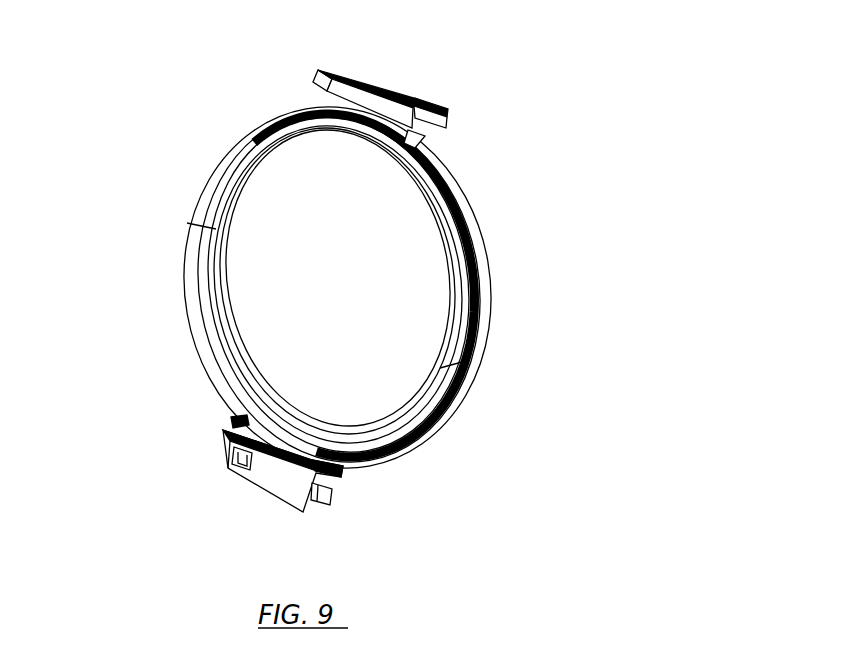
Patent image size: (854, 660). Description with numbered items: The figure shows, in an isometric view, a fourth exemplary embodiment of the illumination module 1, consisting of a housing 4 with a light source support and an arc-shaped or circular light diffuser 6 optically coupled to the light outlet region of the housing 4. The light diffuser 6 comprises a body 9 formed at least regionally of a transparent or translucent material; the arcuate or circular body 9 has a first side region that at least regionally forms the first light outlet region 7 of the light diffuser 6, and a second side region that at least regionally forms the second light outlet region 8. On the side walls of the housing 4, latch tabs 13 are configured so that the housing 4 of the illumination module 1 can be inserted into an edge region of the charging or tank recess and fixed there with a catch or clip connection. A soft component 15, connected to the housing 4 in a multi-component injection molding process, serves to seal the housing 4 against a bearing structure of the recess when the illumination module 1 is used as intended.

The illumination module 1 is at (554, 63).
The housing 4 is at (270, 490).
The light diffuser 6 is at (520, 164).
The first light outlet region 7 is at (203, 302).
The second light outlet region 8 is at (192, 292).
The body 9 is at (170, 151).
The latch tab 13 is at (333, 507).
The soft component 15 is at (228, 428).